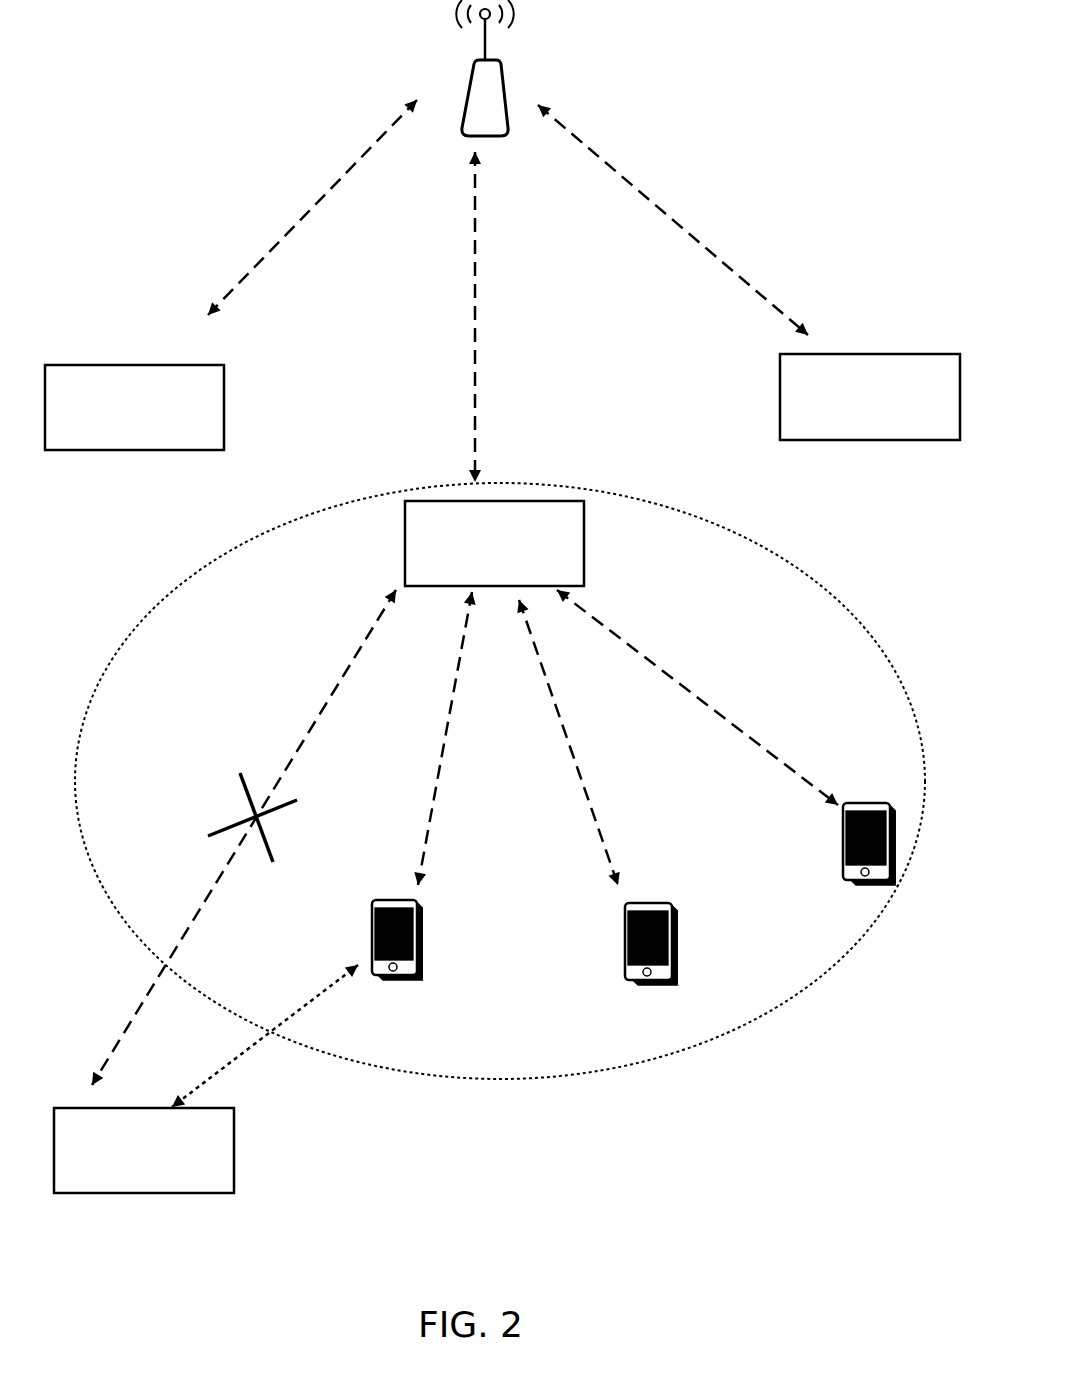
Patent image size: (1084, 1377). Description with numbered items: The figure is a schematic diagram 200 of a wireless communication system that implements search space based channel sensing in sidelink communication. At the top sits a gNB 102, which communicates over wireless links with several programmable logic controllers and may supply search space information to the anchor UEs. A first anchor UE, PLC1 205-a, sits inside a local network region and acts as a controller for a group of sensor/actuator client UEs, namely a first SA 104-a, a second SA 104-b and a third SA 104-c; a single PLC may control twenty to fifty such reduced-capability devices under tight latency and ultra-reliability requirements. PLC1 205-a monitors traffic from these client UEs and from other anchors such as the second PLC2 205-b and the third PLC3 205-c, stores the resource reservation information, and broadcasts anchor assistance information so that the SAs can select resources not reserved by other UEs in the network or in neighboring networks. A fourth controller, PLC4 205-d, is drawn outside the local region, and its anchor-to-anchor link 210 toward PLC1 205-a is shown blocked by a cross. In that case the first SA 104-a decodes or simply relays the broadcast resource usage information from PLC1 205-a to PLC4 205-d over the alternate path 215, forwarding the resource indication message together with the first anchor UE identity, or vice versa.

The schematic diagram 200 is at (806, 1290).
The gNB 102 is at (485, 138).
The first anchor UE (PLC1) 205-a is at (494, 543).
The second PLC (PLC2) 205-b is at (134, 407).
The third PLC (PLC3) 205-c is at (870, 397).
The second anchor UE (PLC4) 205-d is at (144, 1150).
The first SA (first UE) 104-a is at (372, 956).
The second SA (second UE) 104-b is at (625, 960).
The third SA (third UE) 104-c is at (843, 852).
The anchor-to-anchor link 210 is at (240, 776).
The new communication link 215 is at (245, 1052).